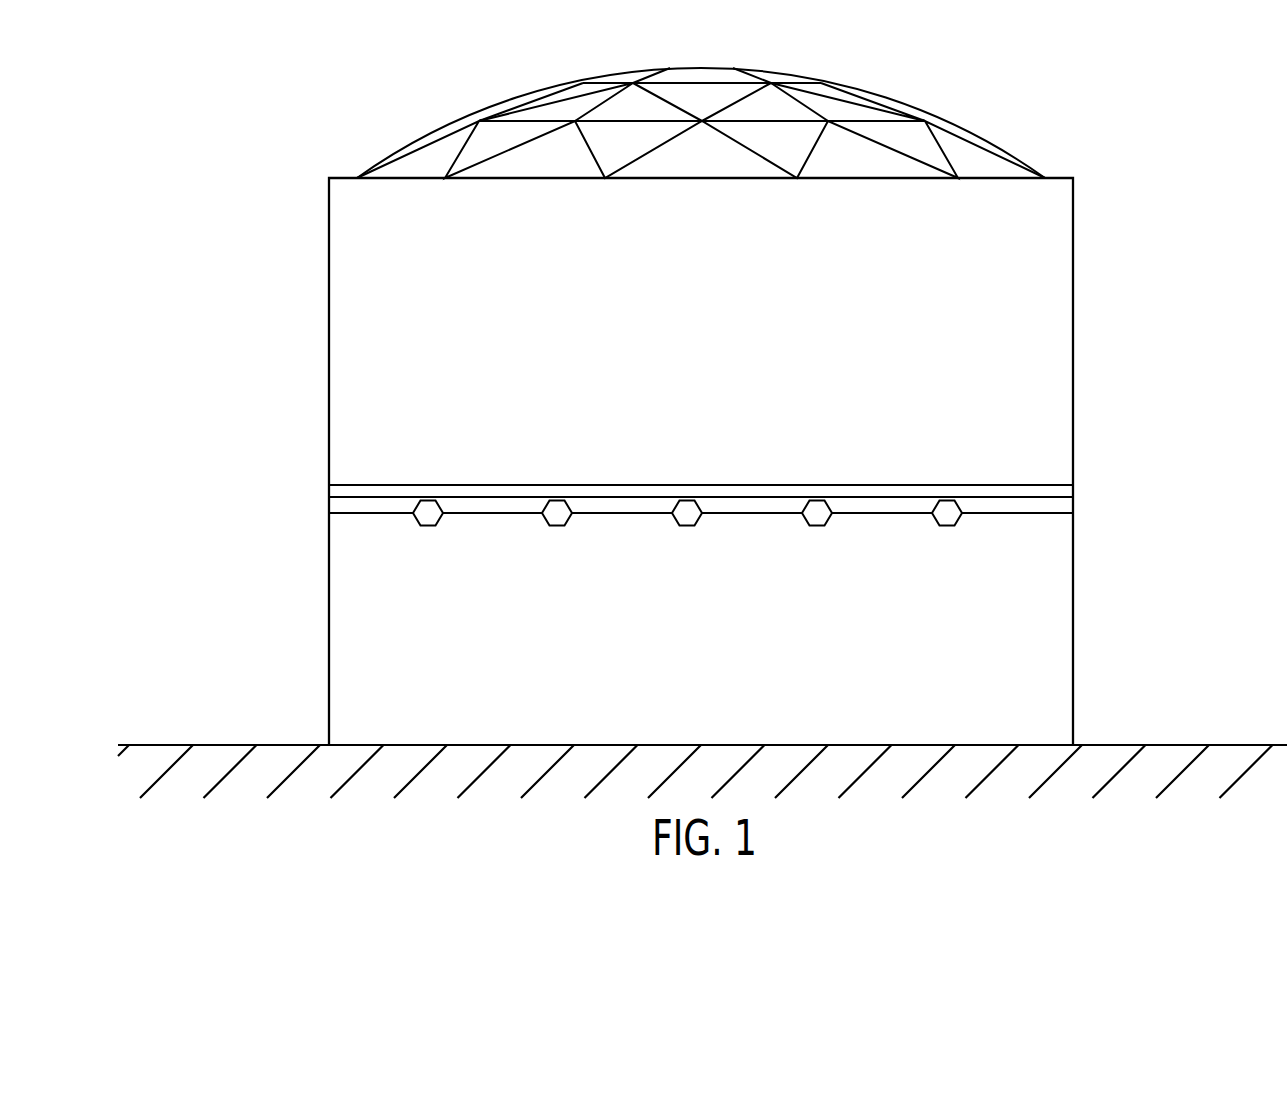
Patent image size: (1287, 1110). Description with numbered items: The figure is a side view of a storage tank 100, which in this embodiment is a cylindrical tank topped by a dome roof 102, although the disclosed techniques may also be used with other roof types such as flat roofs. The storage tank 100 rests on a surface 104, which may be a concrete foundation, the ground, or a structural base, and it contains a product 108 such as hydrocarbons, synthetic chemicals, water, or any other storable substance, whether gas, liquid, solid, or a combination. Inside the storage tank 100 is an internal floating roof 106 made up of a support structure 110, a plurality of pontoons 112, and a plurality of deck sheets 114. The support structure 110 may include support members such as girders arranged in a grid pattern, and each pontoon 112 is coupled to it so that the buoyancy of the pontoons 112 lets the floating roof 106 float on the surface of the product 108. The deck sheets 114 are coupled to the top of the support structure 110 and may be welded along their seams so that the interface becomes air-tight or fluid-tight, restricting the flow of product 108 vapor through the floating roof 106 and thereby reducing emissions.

The storage tank 100 is at (1095, 112).
The dome roof 102 is at (457, 124).
The surface 104 is at (1183, 745).
The internal floating roof 106 is at (981, 484).
The product 108 is at (1058, 597).
The support structure 110 is at (633, 514).
The pontoons 112 is at (557, 525).
The deck sheets 114 is at (738, 483).